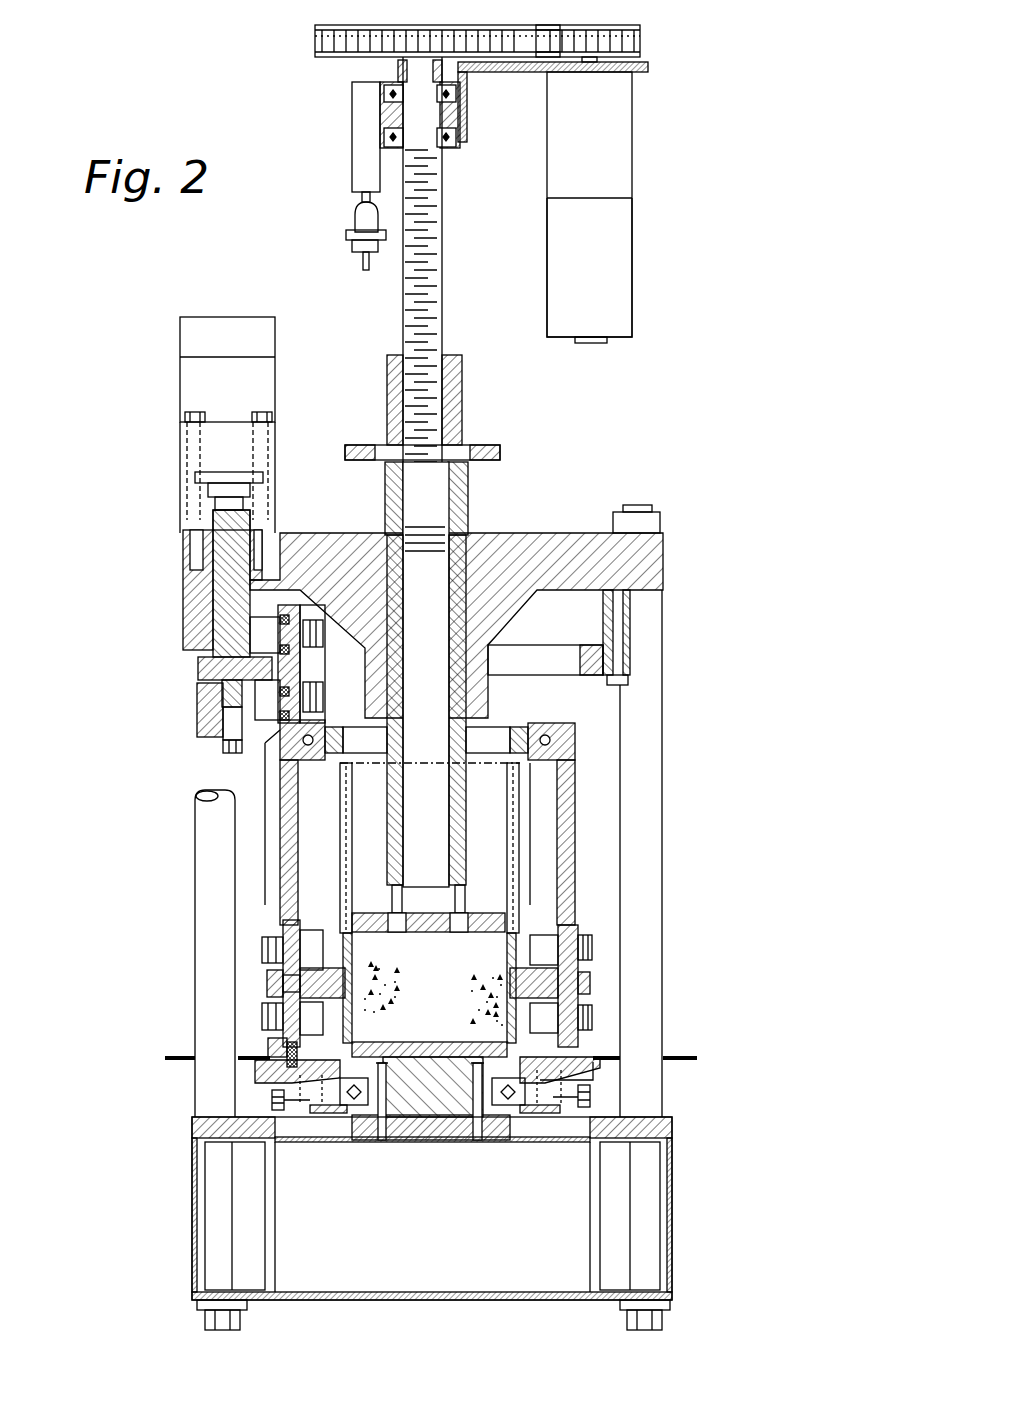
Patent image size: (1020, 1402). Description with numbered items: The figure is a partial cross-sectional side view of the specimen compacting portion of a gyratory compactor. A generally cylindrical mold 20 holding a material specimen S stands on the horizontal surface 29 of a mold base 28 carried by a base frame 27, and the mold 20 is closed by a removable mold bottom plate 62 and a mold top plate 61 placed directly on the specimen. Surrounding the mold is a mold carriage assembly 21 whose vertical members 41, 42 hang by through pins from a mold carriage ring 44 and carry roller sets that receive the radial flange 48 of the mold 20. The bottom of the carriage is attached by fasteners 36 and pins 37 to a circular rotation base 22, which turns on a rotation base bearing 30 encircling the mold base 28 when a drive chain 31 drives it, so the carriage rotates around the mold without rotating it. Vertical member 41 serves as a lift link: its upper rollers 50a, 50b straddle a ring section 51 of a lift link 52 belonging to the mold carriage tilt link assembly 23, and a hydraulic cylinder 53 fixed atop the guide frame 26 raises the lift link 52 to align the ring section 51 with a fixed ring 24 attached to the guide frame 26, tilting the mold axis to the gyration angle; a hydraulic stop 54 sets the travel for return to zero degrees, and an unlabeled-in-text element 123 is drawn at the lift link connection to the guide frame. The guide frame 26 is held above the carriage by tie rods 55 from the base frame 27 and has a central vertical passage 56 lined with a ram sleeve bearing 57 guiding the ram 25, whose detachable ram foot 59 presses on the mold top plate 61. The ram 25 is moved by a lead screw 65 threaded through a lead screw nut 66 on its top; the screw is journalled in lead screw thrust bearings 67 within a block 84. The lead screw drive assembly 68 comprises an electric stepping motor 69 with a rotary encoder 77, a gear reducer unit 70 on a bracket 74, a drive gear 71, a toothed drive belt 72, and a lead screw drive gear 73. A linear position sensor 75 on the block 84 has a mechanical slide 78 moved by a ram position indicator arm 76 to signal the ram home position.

The mold 20 is at (515, 835).
The mold carriage assembly 21 is at (580, 852).
The circular rotation base 22 is at (660, 1062).
The mold carriage tilt link assembly 23 is at (175, 520).
The fixed ring 24 is at (592, 652).
The ram 25 is at (478, 565).
The guide frame 26 is at (655, 565).
The base frame 27 is at (672, 1212).
The mold base 28 is at (410, 1125).
The horizontal surface 29 is at (478, 1100).
The rotation base bearing 30 is at (508, 1107).
The drive chain 31 is at (600, 1092).
The fasteners 36 is at (585, 1050).
The pins 37 is at (262, 1075).
The vertical member 41 is at (285, 835).
The vertical member 42 is at (568, 870).
The mold carriage ring 44 is at (512, 722).
The radial flange 48 is at (270, 985).
The upper roller 50a is at (265, 635).
The upper roller 50b is at (265, 720).
The ring section 51 is at (240, 668).
The lift link 52 is at (195, 665).
The hydraulic cylinder 53 is at (187, 370).
The hydraulic stop 54 is at (238, 752).
The tie rods 55 is at (655, 718).
The central vertical passage 56 is at (475, 475).
The ram sleeve bearing 57 is at (470, 560).
The ram foot 59 is at (285, 928).
The mold top plate 61 is at (466, 935).
The mold bottom plate 62 is at (466, 1045).
The lead screw 65 is at (395, 300).
The lead screw nut 66 is at (470, 400).
The lead screw thrust bearings 67 is at (386, 96).
The lead screw drive assembly 68 is at (690, 70).
The electric stepping motor 69 is at (612, 283).
The gear reducer unit 70 is at (617, 166).
The drive gear 71 is at (605, 24).
The toothed drive belt 72 is at (355, 37).
The lead screw drive gear 73 is at (350, 28).
The bracket 74 is at (637, 74).
The linear position sensor 75 is at (352, 232).
The ram position indicator arm 76 is at (492, 452).
The rotary encoder 77 is at (592, 344).
The mechanical slide 78 is at (362, 262).
The block 84 is at (388, 115).
The screw 123 is at (281, 535).
The material specimen S is at (287, 1045).